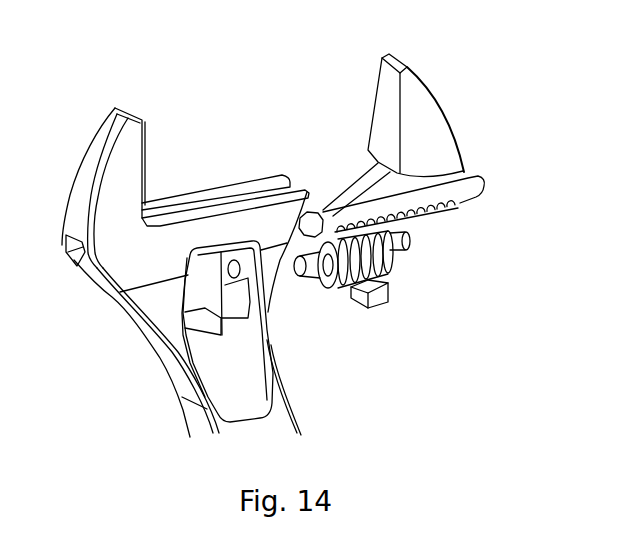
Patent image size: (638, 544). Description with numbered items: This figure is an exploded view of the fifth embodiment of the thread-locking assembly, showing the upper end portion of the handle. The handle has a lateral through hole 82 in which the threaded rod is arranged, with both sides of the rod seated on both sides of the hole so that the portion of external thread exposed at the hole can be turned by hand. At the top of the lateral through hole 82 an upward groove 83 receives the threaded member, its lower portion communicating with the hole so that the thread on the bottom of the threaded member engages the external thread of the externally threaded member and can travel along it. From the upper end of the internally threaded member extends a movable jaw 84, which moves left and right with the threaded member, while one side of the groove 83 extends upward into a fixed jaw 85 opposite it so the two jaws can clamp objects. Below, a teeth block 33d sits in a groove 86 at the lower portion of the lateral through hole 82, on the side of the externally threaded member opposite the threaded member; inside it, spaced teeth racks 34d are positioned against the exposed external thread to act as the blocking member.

The lateral through hole 82 is at (208, 277).
The groove 83 is at (218, 200).
The movable jaw 84 is at (407, 127).
The fixed jaw 85 is at (113, 180).
The groove 86 is at (258, 336).
The teeth block 33d is at (383, 294).
The spaced teeth racks 34d is at (380, 277).